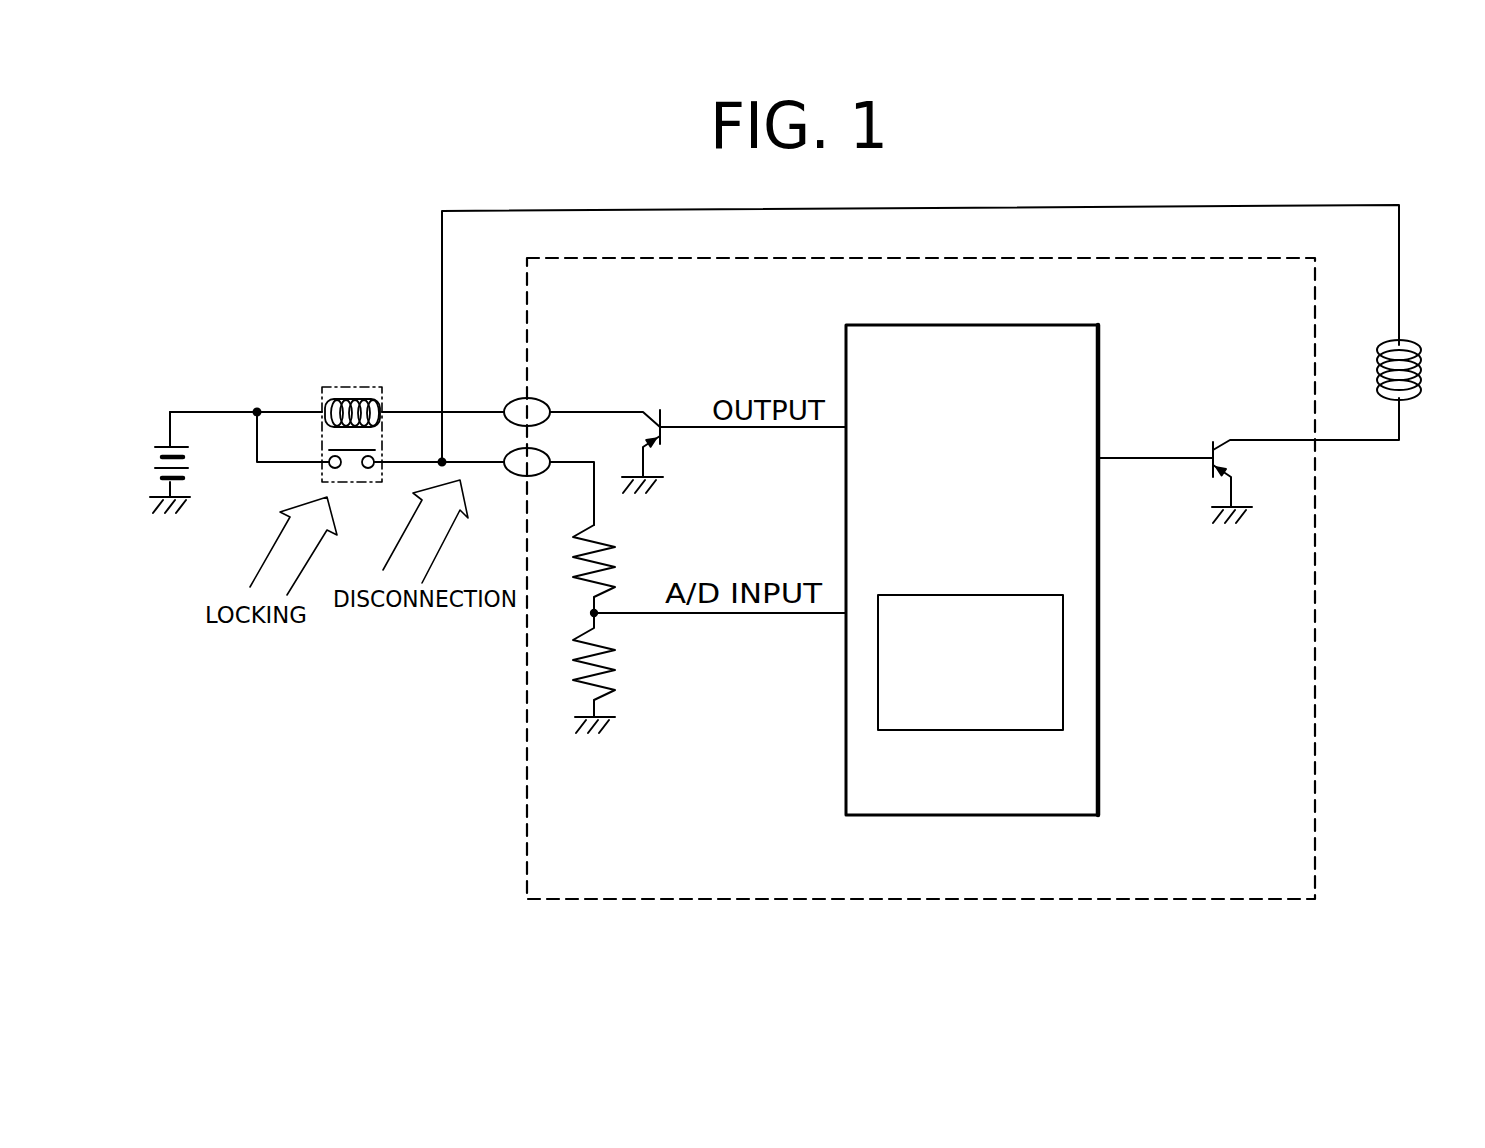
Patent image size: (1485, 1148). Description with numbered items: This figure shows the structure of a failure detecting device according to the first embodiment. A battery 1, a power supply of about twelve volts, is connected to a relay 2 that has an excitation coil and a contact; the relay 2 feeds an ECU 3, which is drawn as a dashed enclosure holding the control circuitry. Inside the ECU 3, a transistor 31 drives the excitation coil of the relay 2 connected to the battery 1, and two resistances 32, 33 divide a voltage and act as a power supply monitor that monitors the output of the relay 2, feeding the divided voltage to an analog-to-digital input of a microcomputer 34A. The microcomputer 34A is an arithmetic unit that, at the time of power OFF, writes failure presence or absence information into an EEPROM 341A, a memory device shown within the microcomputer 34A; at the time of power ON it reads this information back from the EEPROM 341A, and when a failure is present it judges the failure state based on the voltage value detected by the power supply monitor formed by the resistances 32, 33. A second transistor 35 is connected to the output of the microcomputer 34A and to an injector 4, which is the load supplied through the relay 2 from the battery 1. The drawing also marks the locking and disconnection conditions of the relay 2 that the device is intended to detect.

The battery 1 is at (163, 432).
The relay 2 is at (342, 385).
The ECU 3 is at (695, 258).
The transistor 31 is at (661, 421).
The resistance 32 is at (597, 536).
The resistance 33 is at (596, 679).
The microcomputer 34A is at (980, 325).
The EEPROM 341A is at (1063, 658).
The transistor 35 is at (1213, 455).
The injector 4 is at (1422, 345).